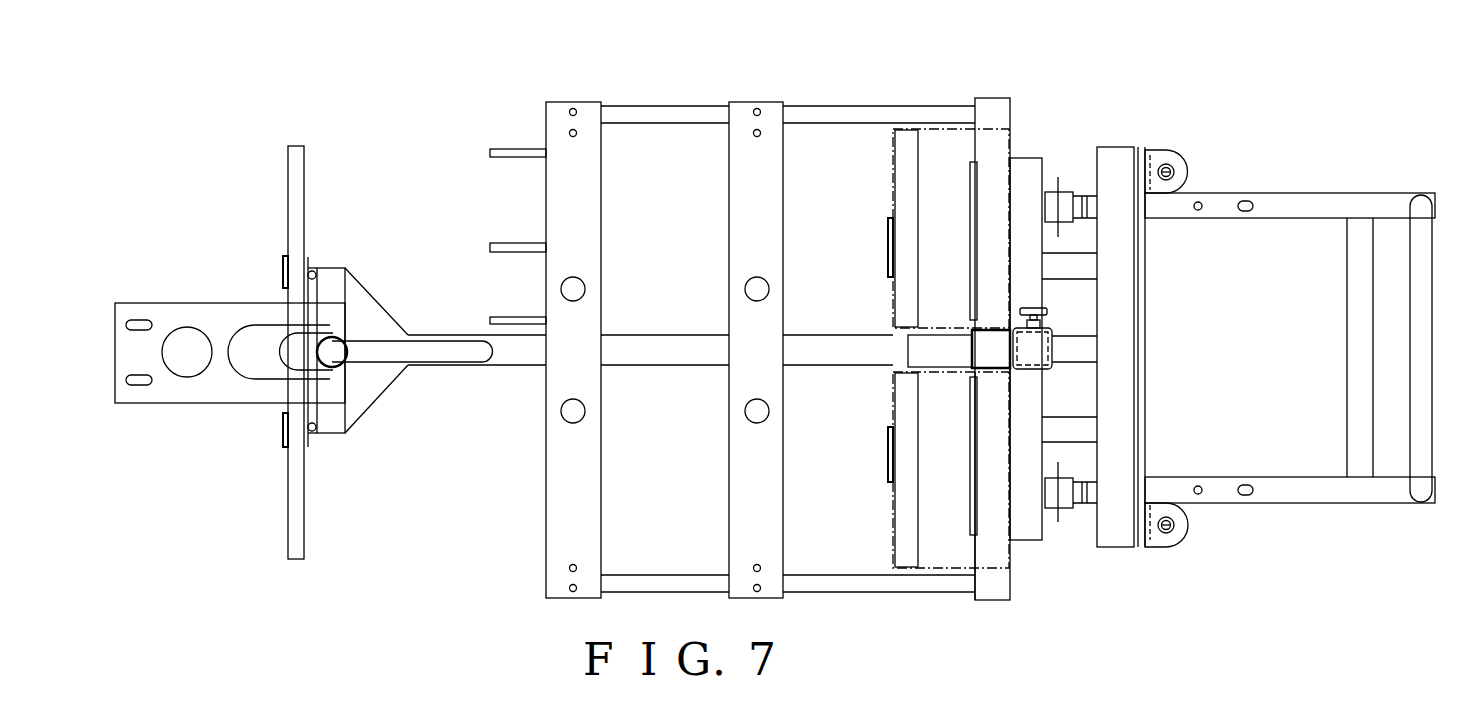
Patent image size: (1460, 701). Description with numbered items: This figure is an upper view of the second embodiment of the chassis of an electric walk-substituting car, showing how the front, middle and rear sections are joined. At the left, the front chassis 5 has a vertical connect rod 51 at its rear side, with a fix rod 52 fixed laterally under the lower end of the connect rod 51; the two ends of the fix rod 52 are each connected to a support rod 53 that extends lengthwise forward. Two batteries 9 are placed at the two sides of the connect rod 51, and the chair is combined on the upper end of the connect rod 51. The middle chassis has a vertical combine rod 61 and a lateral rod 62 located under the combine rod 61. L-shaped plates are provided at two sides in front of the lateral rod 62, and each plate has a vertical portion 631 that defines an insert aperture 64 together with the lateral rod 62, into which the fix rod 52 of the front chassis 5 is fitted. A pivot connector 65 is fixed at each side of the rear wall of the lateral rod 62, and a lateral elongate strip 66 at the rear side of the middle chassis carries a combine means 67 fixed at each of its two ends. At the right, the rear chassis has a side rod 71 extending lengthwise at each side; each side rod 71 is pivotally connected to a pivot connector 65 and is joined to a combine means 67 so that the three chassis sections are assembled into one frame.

The front chassis 5 is at (577, 90).
The battery 9 is at (942, 147).
The vertical connect rod 51 is at (982, 355).
The fix rod 52 is at (1000, 108).
The support rod 53 is at (843, 115).
The combine rod 61 is at (1022, 372).
The lateral rod 62 is at (1028, 528).
The vertical portion 631 is at (968, 485).
The insert aperture 64 is at (976, 505).
The pivot connector 65 is at (1052, 192).
The lateral elongate strip 66 is at (1118, 168).
The combine means 67 is at (1183, 167).
The side rod 71 is at (1268, 202).